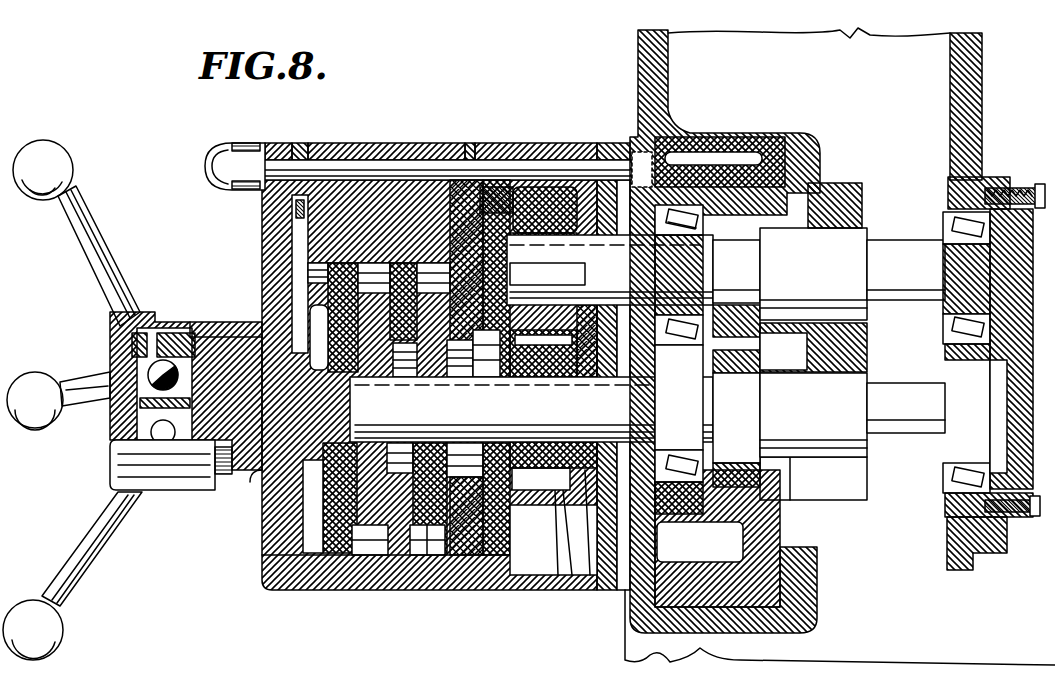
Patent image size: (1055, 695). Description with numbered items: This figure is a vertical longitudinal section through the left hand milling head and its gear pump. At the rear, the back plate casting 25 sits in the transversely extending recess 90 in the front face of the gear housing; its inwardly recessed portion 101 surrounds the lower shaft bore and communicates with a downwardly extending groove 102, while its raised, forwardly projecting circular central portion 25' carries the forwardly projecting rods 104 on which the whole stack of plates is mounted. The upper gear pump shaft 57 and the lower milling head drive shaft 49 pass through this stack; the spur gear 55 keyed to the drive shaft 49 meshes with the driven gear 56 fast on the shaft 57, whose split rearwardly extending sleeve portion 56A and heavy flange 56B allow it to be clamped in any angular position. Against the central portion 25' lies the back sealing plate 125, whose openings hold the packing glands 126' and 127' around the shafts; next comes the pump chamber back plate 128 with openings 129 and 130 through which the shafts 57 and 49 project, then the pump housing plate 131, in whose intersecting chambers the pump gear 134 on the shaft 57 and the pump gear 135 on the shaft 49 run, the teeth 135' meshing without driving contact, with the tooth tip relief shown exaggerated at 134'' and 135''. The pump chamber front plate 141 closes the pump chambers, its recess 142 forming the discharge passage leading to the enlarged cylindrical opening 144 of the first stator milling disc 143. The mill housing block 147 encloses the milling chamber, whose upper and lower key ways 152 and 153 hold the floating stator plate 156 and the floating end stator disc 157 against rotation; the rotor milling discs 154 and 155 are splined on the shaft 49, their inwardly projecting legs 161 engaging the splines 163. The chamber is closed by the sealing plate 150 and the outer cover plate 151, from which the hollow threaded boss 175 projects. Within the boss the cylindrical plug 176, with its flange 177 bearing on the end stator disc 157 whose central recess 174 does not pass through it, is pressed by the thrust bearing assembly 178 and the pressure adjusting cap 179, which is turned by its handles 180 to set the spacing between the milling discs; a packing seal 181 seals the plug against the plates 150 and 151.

The back plate casting 25 is at (821, 346).
The raised circular central portion 25' is at (631, 148).
The milling head drive shaft 49 is at (690, 403).
The second spur gear 55 is at (763, 497).
The spur gear 56 is at (745, 207).
The sleeve portion 56A is at (792, 217).
The flange 56B is at (863, 200).
The upper gear pump shaft 57 is at (660, 240).
The transversely extending recess 90 is at (713, 137).
The inwardly recessed portion 101 is at (645, 232).
The downwardly extending groove 102 is at (625, 549).
The forwardly projecting rods 104 is at (364, 158).
The back sealing plate 125 is at (610, 147).
The packing gland 126' is at (681, 265).
The packing gland 127' is at (607, 353).
The pump chamber back plate 128 is at (600, 150).
The opening 129 is at (588, 228).
The opening 130 is at (582, 372).
The pump housing plate 131 is at (540, 157).
The gear 134 is at (530, 177).
The tooth tip relief 134'' is at (510, 168).
The gear 135 is at (559, 607).
The teeth 135' is at (597, 597).
The tooth tip relief 135'' is at (613, 613).
The pump chamber front plate 141 is at (484, 186).
The recess 142 is at (492, 368).
The first stator milling disc 143 is at (462, 585).
The enlarged cylindrical opening 144 is at (460, 372).
The mill housing plate 147 is at (333, 563).
The sealing plate 150 is at (303, 143).
The outer cover plate 151 is at (262, 567).
The upper key way 152 is at (372, 268).
The lower key way 153 is at (425, 555).
The rotor milling disc 154 is at (462, 585).
The rotor milling disc 155 is at (366, 535).
The floating stator plate 156 is at (372, 290).
The floating end stator disc 157 is at (306, 560).
The inwardly projecting legs 161 is at (553, 508).
The splines 163 is at (560, 421).
The central recess 174 is at (232, 478).
The externally threaded boss 175 is at (224, 336).
The cylindrical plug 176 is at (233, 467).
The flange 177 is at (303, 510).
The thrust bearing assembly 178 is at (165, 360).
The pressure adjusting cap 179 is at (182, 473).
The handles 180 is at (88, 236).
The packing seal 181 is at (287, 350).